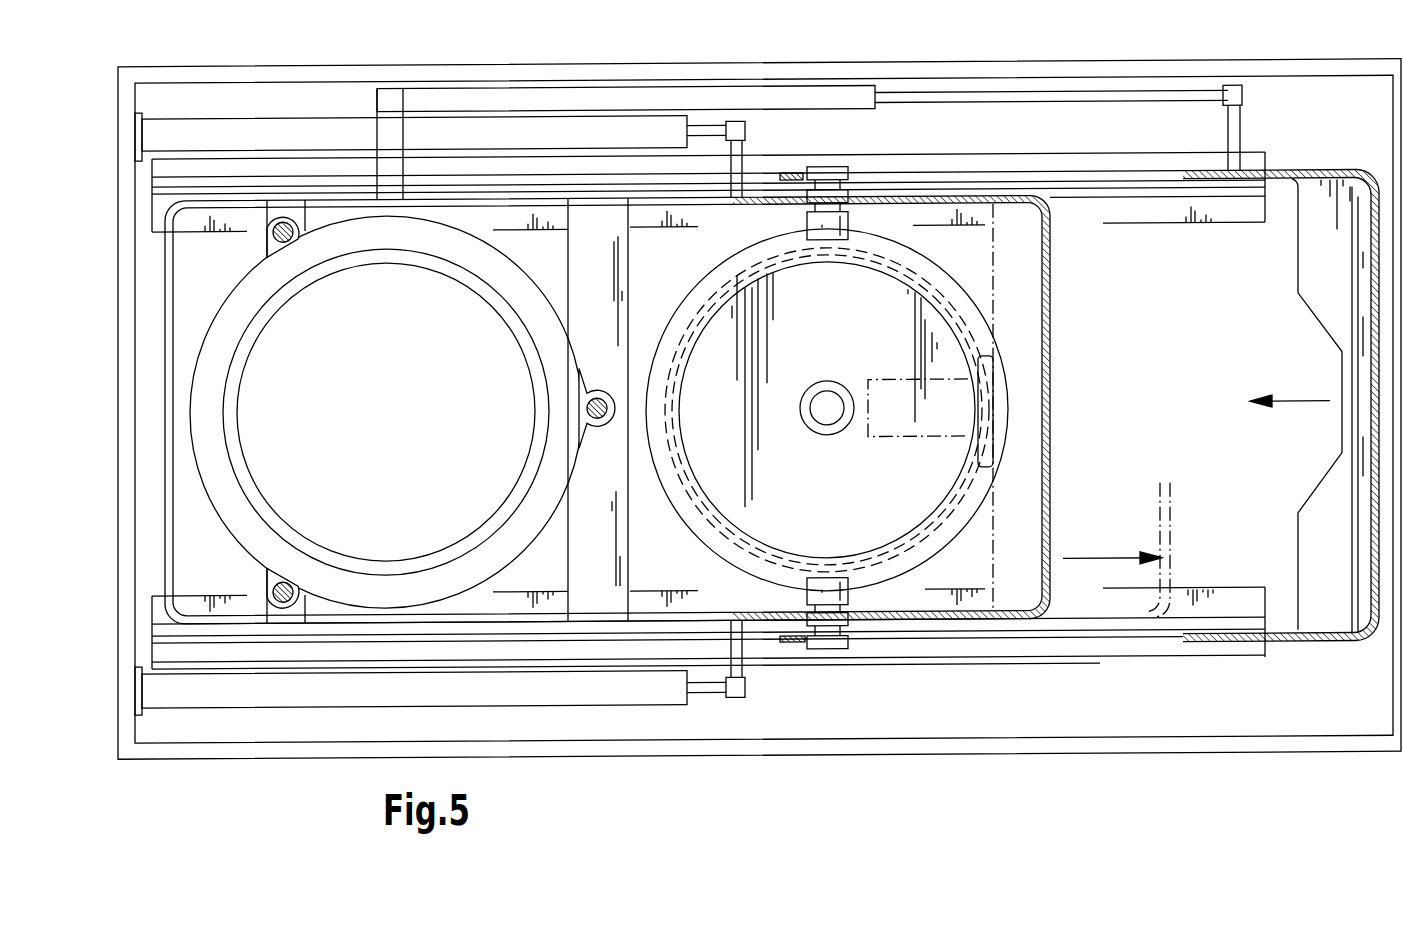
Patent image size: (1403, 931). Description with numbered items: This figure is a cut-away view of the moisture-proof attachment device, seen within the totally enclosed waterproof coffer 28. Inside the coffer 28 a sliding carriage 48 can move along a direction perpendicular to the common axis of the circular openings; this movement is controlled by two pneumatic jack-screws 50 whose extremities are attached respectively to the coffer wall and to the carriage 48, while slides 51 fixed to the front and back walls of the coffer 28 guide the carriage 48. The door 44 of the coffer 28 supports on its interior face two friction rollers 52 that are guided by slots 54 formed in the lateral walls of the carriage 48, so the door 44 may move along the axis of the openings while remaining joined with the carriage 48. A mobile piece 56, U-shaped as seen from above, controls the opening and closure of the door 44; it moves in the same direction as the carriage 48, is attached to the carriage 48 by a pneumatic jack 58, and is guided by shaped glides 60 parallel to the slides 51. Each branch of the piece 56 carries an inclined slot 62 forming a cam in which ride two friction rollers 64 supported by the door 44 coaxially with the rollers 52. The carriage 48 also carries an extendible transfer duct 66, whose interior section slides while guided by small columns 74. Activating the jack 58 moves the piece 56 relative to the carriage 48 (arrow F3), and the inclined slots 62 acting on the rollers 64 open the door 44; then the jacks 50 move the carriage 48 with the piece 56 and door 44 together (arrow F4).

The waterproof coffer 28 is at (407, 70).
The door 44 is at (861, 344).
The sliding carriage 48 is at (158, 307).
The pneumatic jack-screws 50 is at (312, 117).
The slides 51 is at (1150, 199).
The friction rollers 52 is at (847, 202).
The slots 54 is at (807, 218).
The mobile piece 56 is at (1328, 172).
The pneumatic jack 58 is at (843, 110).
The shaped glides 60 is at (187, 168).
The inclined slot 62 is at (1003, 172).
The friction rollers 64 is at (843, 167).
The extendible transfer duct 66 is at (232, 336).
The small columns 74 is at (292, 233).
The arrow F3 is at (1315, 404).
The arrow F4 is at (1118, 560).